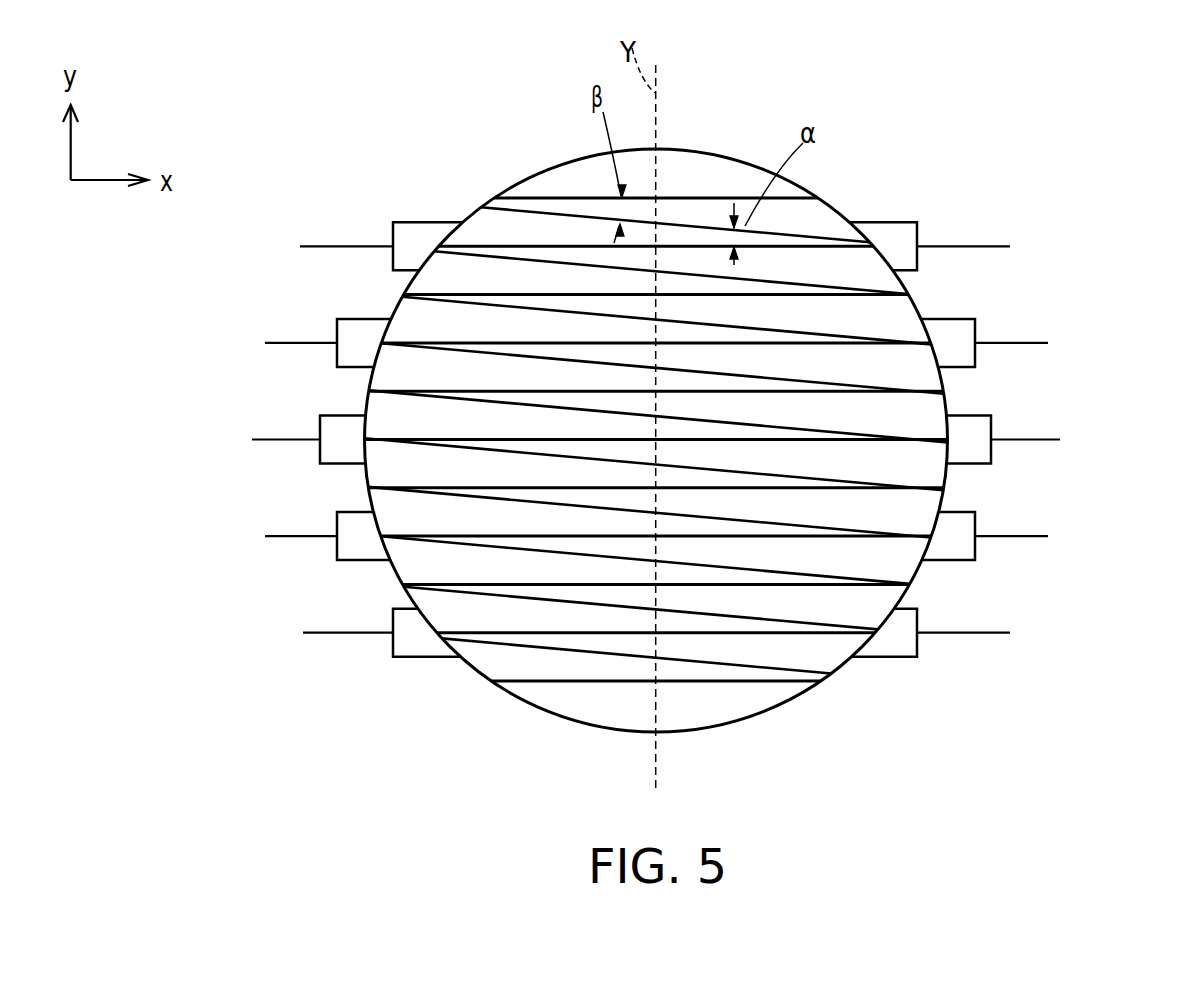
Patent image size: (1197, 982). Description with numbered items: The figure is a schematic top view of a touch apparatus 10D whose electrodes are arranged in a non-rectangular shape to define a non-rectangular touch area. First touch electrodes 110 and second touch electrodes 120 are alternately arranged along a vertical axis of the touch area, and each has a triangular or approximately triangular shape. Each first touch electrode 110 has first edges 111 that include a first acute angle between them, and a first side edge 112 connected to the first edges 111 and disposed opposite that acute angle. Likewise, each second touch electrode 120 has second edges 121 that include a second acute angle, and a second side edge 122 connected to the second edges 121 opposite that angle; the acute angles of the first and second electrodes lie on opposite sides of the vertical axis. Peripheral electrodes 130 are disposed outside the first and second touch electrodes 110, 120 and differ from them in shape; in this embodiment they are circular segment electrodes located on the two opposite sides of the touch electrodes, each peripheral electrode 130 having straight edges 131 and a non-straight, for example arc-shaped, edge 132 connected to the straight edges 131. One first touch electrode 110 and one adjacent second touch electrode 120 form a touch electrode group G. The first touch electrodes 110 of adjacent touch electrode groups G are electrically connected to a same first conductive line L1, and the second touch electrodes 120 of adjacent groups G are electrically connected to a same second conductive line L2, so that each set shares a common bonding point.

The touch apparatus 10D is at (1070, 786).
The first touch electrode 110 is at (480, 220).
The first edges 111 is at (600, 247).
The first side edge 112 is at (450, 230).
The second touch electrode 120 is at (883, 282).
The second edges 121 is at (763, 232).
The second side edge 122 is at (860, 229).
The peripheral electrode 130 is at (592, 177).
The straight edge 131 is at (670, 200).
The non-straight edge 132 is at (719, 155).
The first conductive line L1 is at (348, 246).
The second conductive line L2 is at (973, 247).
The touch electrode group G is at (1133, 90).